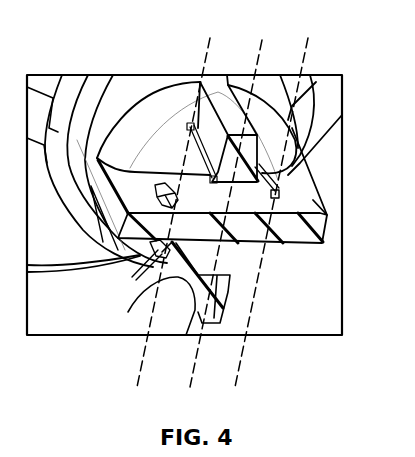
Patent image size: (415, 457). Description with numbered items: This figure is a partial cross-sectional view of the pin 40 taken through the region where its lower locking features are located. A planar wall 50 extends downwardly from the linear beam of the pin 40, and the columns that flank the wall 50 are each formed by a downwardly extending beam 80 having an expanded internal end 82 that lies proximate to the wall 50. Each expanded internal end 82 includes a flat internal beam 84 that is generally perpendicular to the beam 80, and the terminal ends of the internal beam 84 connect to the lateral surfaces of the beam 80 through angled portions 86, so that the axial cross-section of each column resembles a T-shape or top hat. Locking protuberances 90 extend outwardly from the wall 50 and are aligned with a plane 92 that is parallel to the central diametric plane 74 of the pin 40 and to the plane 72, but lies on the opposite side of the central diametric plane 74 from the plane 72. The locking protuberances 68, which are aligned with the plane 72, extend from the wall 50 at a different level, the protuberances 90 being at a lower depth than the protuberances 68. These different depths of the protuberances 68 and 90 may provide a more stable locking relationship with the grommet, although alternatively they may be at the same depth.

The pin 40 is at (91, 50).
The wall 50 is at (327, 233).
The locking protuberance 68 is at (280, 198).
The plane 72 is at (307, 53).
The central diametric plane 74 is at (263, 52).
The beam 80 is at (213, 103).
The expanded internal end 82 is at (168, 272).
The internal beam 84 is at (205, 268).
The angled portion 86 is at (187, 305).
The locking protuberance 90 is at (165, 200).
The plane 92 is at (208, 42).